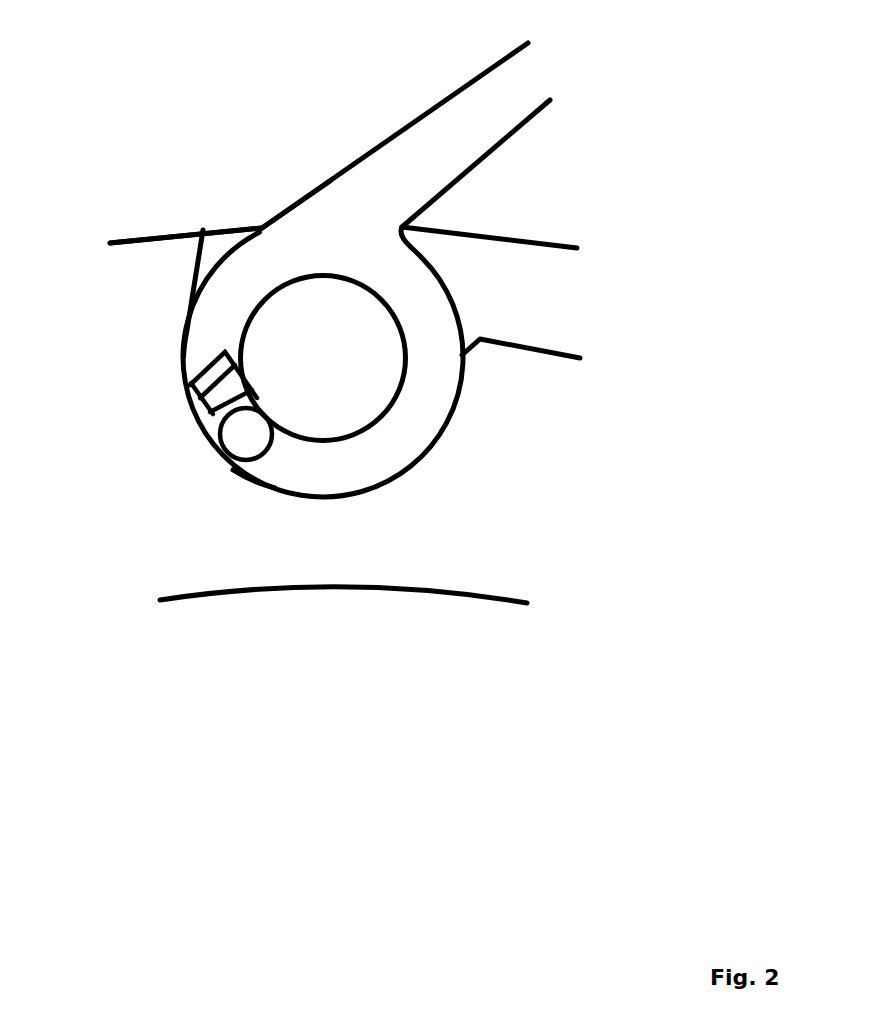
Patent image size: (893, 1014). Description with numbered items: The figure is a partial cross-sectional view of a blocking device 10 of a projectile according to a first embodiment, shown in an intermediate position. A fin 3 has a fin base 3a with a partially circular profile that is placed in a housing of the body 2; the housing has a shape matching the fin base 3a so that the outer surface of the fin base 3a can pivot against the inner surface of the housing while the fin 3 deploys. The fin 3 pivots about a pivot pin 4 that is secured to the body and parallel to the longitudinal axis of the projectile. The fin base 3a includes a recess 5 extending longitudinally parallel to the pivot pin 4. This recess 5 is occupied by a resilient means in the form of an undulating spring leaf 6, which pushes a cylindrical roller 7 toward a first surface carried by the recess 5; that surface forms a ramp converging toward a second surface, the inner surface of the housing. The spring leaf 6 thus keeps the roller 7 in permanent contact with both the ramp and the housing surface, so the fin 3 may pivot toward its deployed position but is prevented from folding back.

The body 2 is at (375, 555).
The fin 3 is at (460, 127).
The fin base 3a is at (267, 260).
The pivot pin 4 is at (369, 368).
The recess 5 is at (235, 355).
The undulating spring leaf 6 is at (205, 400).
The cylindrical roller 7 is at (250, 445).
The blocking device 10 is at (212, 213).